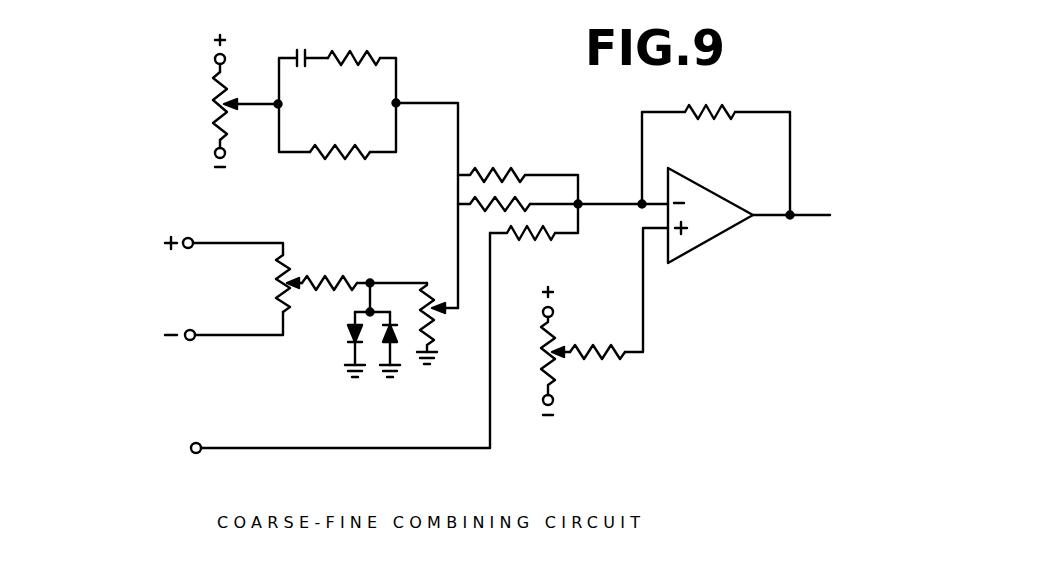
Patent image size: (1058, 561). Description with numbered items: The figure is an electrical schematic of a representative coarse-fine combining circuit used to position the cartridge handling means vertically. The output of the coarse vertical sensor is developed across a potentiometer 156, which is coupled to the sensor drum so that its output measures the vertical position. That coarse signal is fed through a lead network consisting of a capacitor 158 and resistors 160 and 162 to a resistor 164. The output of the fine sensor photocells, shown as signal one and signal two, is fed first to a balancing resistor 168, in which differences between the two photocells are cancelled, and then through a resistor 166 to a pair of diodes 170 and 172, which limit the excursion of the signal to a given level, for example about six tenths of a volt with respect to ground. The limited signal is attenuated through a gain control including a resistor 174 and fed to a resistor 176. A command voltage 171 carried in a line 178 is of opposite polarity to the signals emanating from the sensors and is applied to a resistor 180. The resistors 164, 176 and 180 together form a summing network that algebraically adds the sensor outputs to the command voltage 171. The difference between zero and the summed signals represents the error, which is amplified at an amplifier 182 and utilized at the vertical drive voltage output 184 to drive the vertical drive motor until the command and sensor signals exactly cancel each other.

The potentiometer 156 is at (222, 108).
The capacitor 158 is at (317, 29).
The resistor 160 is at (338, 50).
The resistor 162 is at (340, 152).
The resistor 164 is at (507, 170).
The resistor 166 is at (332, 274).
The balancing resistor 168 is at (278, 284).
The diode 170 is at (348, 338).
The diode 172 is at (398, 336).
The gain control resistor 174 is at (426, 306).
The resistor 176 is at (512, 200).
The line 178 is at (222, 456).
The command voltage 171 is at (187, 438).
The resistor 180 is at (551, 239).
The amplifier 182 is at (707, 238).
The vertical drive voltage output 184 is at (818, 230).